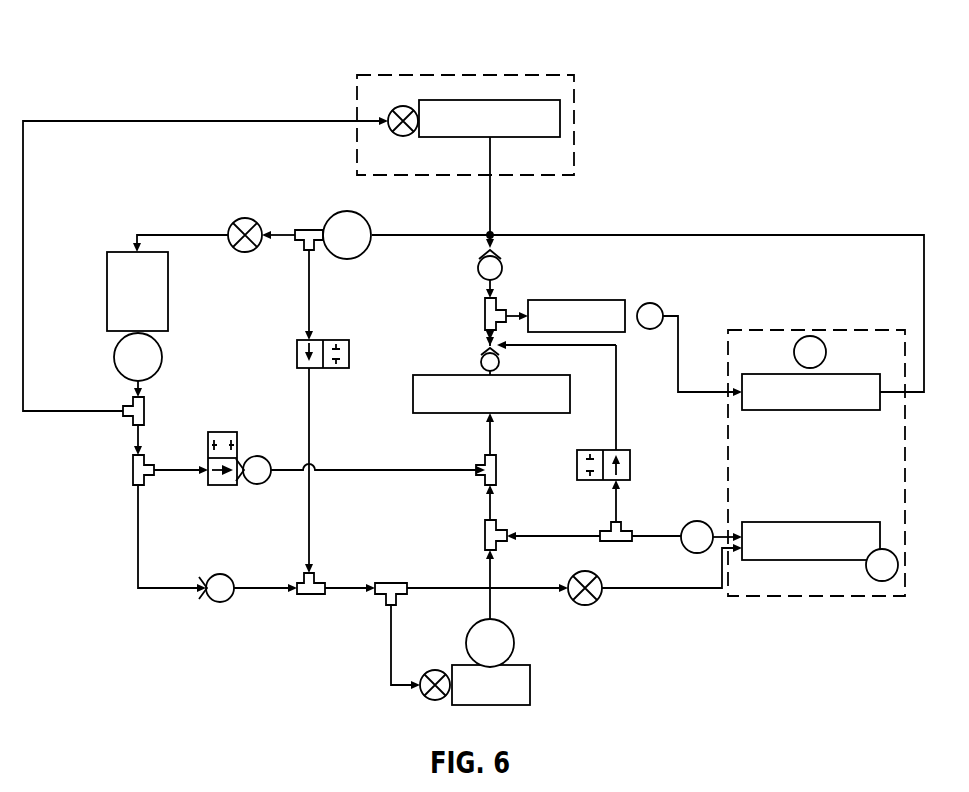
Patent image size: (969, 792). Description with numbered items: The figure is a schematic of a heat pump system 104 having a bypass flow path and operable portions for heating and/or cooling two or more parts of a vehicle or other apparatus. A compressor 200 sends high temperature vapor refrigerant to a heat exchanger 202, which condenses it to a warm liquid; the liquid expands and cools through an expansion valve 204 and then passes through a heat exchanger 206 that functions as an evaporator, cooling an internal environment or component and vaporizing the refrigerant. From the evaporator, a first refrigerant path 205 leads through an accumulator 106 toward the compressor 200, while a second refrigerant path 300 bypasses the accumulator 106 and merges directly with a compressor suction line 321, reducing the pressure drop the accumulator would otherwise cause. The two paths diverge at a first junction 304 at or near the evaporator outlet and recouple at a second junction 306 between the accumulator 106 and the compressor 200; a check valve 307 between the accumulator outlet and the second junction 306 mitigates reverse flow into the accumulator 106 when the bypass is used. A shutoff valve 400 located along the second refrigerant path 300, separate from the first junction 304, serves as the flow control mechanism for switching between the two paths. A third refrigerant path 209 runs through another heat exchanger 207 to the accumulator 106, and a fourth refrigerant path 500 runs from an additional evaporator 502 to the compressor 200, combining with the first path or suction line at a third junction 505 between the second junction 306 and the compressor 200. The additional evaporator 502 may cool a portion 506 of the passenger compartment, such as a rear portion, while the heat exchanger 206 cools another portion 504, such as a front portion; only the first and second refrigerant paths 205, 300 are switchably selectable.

The heat pump system 104 is at (105, 27).
The fourth refrigerant path 500 is at (205, 121).
The portion of the passenger compartment 506 is at (408, 74).
The additional evaporator 502 is at (490, 100).
The compressor suction line 321 is at (508, 310).
The third junction 505 is at (477, 305).
The second junction 306 is at (481, 330).
The check valve 307 is at (486, 351).
The compressor 200 is at (592, 299).
The second refrigerant path 300 is at (619, 392).
The accumulator 106 is at (478, 416).
The shutoff valve 400 is at (590, 449).
The heat exchanger 202 is at (820, 411).
The heat exchanger 206 is at (810, 522).
The portion of the passenger compartment 504 is at (815, 598).
The first junction 304 is at (626, 550).
The third refrigerant path 209 is at (488, 577).
The first refrigerant path 205 is at (530, 593).
The expansion valve 204 is at (585, 605).
The heat exchanger 207 is at (532, 683).